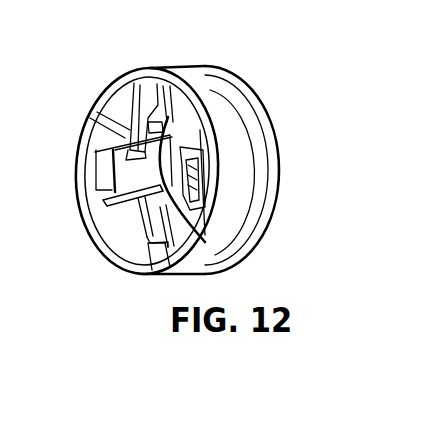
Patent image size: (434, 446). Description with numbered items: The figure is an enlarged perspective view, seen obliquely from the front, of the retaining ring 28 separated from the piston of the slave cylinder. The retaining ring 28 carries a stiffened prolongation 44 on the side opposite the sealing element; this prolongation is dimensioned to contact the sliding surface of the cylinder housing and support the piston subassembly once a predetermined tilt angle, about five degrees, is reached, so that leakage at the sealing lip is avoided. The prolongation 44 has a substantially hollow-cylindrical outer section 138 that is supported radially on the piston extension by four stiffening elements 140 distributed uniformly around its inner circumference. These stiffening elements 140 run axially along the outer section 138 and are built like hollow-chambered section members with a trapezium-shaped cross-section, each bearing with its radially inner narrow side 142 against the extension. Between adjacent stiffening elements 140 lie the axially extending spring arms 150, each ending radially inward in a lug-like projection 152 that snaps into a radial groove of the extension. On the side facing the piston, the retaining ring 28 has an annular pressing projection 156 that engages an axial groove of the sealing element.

The retaining ring 28 is at (245, 141).
The stiffened prolongation 44 is at (160, 72).
The hollow-cylindrical outer section 138 is at (252, 201).
The stiffening elements 140 is at (187, 172).
The radially inner narrow side 142 is at (128, 172).
The spring arms 150 is at (136, 105).
The lug-like projection 152 is at (133, 128).
The annular pressing projection 156 is at (270, 168).